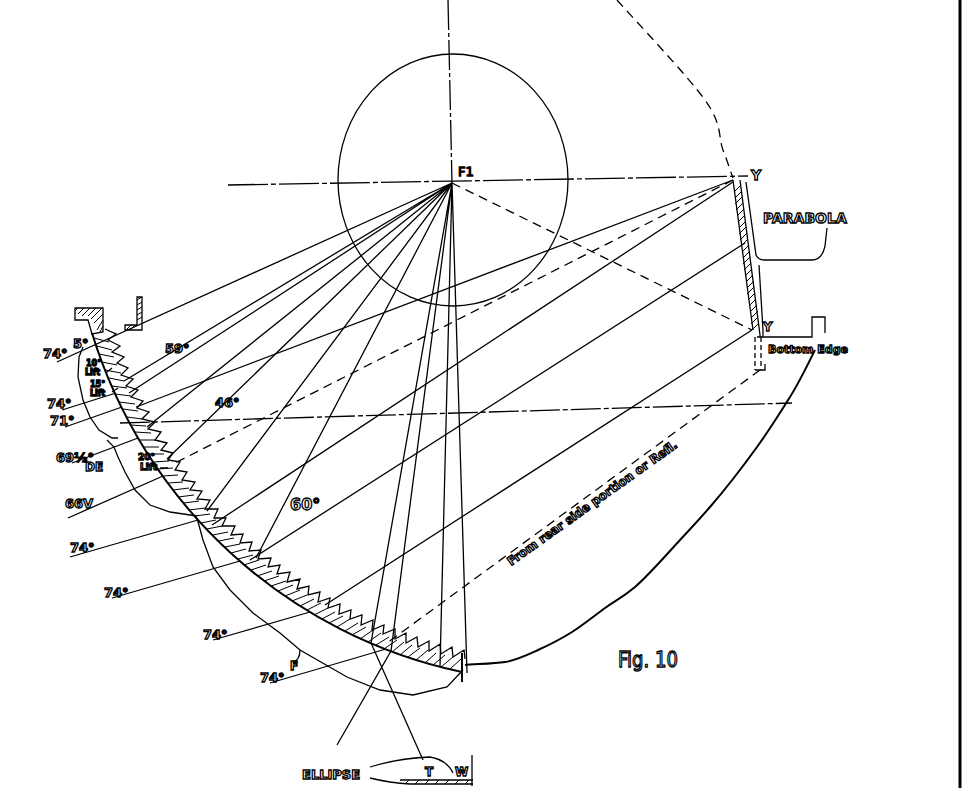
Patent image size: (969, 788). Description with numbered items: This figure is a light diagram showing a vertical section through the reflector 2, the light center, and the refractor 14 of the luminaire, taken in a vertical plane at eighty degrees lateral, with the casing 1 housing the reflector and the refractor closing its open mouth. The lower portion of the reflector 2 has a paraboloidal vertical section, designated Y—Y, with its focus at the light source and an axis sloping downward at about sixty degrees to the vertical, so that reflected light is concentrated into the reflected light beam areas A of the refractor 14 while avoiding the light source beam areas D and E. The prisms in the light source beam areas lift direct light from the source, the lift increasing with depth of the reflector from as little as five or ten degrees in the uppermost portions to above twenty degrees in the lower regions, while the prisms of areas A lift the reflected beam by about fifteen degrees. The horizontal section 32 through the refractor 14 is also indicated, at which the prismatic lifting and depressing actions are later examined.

The casing 1 is at (730, 242).
The reflector 2 is at (760, 288).
The refractor 14 is at (703, 520).
The horizontal section 32 is at (484, 410).